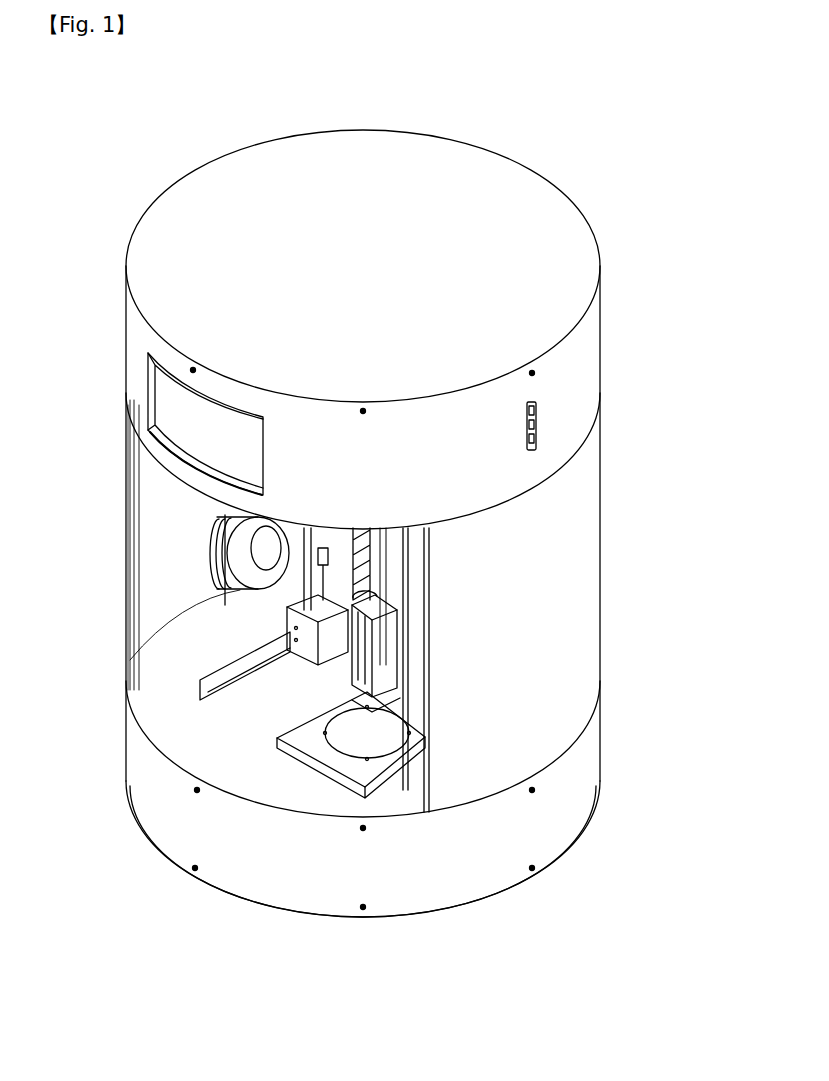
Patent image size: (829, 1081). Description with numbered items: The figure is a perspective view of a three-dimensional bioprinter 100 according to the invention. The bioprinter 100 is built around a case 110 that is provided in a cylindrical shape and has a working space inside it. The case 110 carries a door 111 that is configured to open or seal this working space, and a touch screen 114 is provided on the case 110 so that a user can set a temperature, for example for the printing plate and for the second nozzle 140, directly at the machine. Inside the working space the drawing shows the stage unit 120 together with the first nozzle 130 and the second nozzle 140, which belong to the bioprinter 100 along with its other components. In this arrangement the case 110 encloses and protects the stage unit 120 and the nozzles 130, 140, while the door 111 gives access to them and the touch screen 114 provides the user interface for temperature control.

The 3D bioprinter 100 is at (108, 110).
The case 110 is at (615, 503).
The door 111 is at (170, 533).
The touch screen 114 is at (168, 400).
The stage unit 120 is at (308, 773).
The first nozzle 130 is at (267, 622).
The second nozzle 140 is at (342, 665).